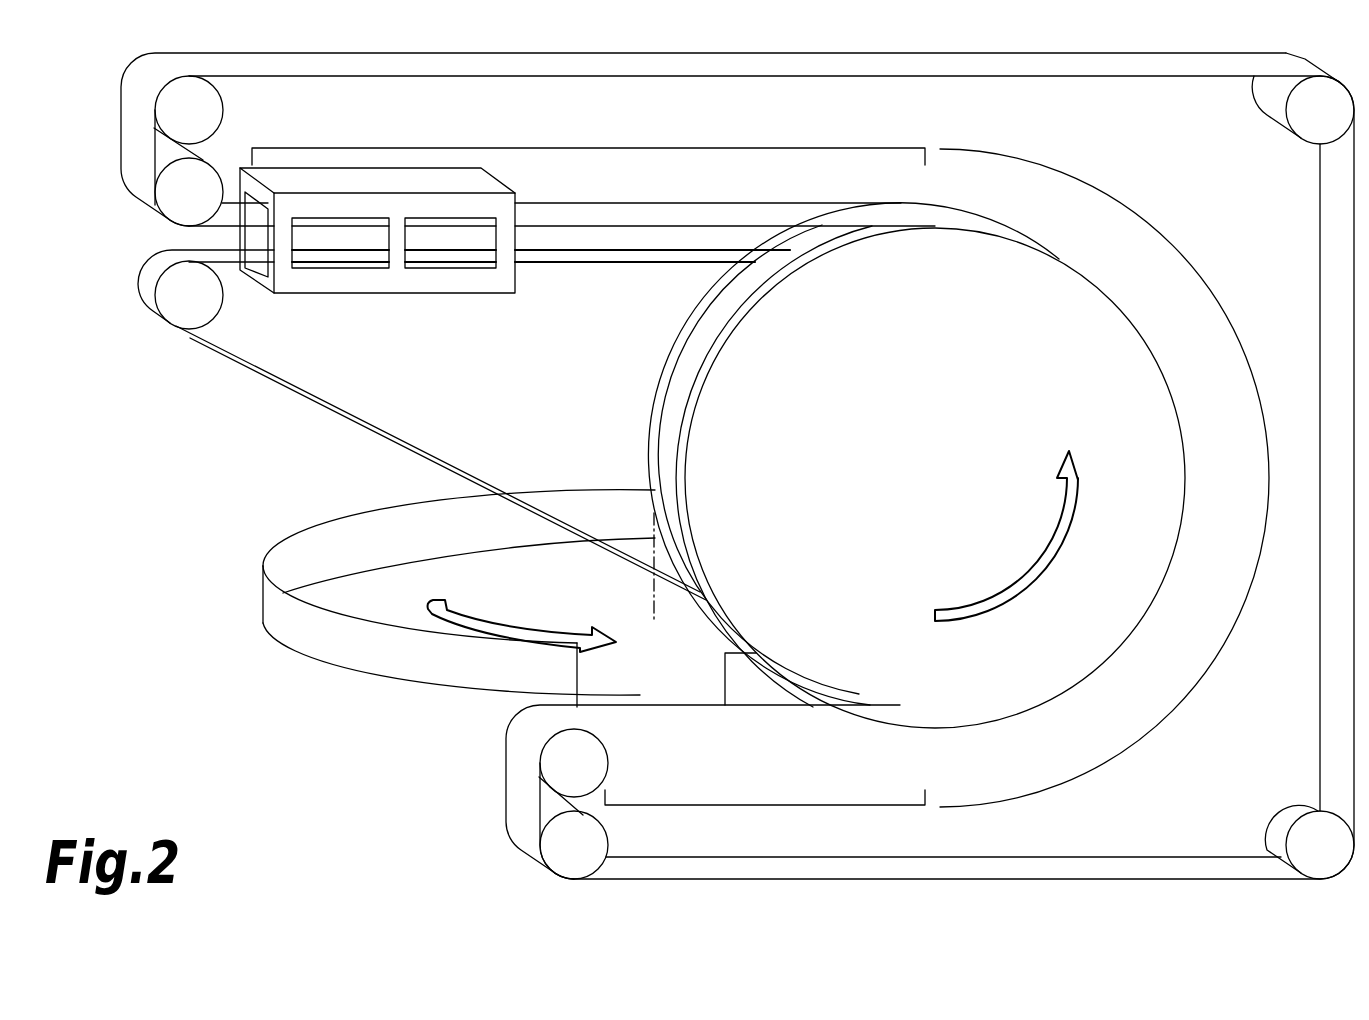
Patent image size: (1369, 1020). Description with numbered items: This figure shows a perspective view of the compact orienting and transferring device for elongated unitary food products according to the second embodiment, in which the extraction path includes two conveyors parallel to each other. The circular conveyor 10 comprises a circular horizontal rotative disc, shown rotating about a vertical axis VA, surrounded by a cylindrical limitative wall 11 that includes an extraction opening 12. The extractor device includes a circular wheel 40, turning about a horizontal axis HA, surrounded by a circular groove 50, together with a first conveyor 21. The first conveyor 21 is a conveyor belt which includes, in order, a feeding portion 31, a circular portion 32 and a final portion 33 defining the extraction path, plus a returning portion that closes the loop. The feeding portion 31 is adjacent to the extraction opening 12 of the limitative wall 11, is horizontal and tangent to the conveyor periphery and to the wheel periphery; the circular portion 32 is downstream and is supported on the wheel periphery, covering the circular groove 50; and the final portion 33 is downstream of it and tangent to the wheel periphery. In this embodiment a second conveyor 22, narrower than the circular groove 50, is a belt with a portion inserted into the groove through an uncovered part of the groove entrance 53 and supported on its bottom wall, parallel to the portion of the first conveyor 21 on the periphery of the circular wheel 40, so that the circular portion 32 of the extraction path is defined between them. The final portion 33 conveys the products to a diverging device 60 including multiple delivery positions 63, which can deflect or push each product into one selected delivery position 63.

The circular conveyor 10 is at (373, 583).
The cylindrical limitative wall 11 is at (418, 675).
The extraction opening 12 is at (605, 680).
The first conveyor 21 is at (592, 228).
The second conveyor 22 is at (643, 263).
The feeding portion 31 is at (765, 805).
The circular portion 32 is at (1263, 480).
The final portion 33 is at (593, 148).
The circular wheel 40 is at (770, 405).
The circular groove 50 is at (686, 383).
The groove entrance 53 is at (714, 459).
The diverging device 60 is at (380, 293).
The delivery positions 63 is at (260, 240).
The horizontal axis HA is at (964, 503).
The vertical axis VA is at (640, 545).